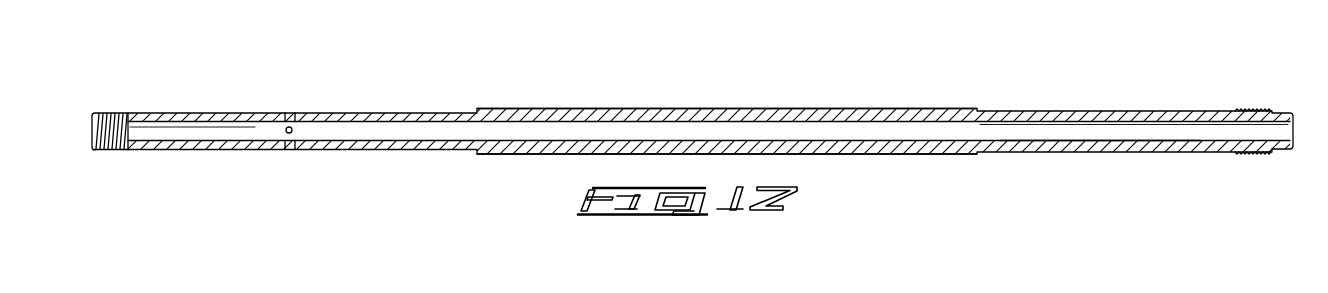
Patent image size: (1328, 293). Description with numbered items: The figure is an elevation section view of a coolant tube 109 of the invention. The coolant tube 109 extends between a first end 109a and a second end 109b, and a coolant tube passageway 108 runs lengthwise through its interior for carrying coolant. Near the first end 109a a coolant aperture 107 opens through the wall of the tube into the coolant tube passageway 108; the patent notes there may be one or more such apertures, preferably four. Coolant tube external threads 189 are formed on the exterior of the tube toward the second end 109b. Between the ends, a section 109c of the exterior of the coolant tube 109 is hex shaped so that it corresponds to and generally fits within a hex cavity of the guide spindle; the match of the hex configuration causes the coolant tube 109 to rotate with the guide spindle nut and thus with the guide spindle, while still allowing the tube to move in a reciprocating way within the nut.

The coolant tube 109 is at (1025, 117).
The first end 109a is at (108, 112).
The second end 109b is at (1218, 112).
The hex shaped section 109c is at (975, 89).
The coolant aperture 107 is at (292, 128).
The coolant tube passageway 108 is at (1098, 130).
The coolant tube external threads 189 is at (1247, 151).